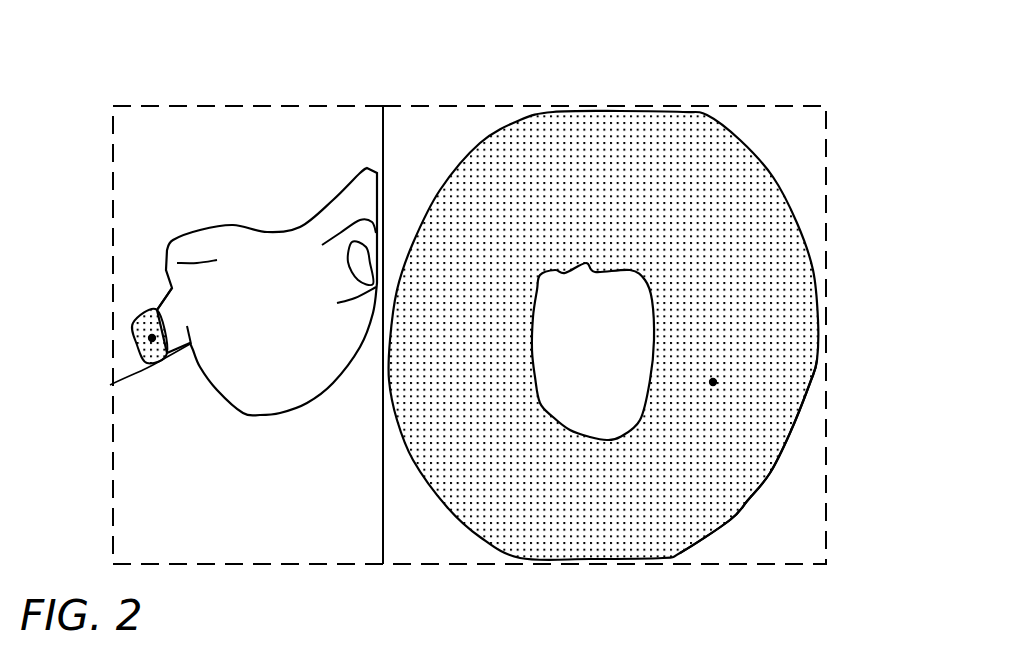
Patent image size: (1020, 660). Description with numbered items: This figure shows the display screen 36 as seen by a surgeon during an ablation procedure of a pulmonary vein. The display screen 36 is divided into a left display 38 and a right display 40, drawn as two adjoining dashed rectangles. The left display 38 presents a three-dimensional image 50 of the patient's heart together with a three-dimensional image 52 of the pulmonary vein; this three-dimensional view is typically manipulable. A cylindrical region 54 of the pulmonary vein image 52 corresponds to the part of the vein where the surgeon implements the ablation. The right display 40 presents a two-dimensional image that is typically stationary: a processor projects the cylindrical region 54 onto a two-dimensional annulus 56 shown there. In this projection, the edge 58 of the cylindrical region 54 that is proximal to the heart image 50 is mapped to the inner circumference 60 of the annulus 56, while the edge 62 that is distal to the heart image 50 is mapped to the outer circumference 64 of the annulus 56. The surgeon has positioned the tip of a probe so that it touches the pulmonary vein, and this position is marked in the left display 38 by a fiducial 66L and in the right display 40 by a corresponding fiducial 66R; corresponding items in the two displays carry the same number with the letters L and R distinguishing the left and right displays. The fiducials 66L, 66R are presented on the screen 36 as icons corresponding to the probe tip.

The display screen 36 is at (90, 54).
The left display 38 is at (247, 107).
The right display 40 is at (503, 106).
The 3D image of heart 50 is at (278, 380).
The 3D image of pulmonary vein 52 is at (190, 347).
The cylindrical region 54 is at (110, 385).
The 2D annulus 56 is at (773, 252).
The edge proximal to image of heart 58 is at (162, 292).
The inner circumference 60 is at (607, 441).
The edge distal to image of heart 62 is at (147, 355).
The outer circumference 64 is at (768, 475).
The fiducial 66L is at (131, 330).
The fiducial 66R is at (713, 382).